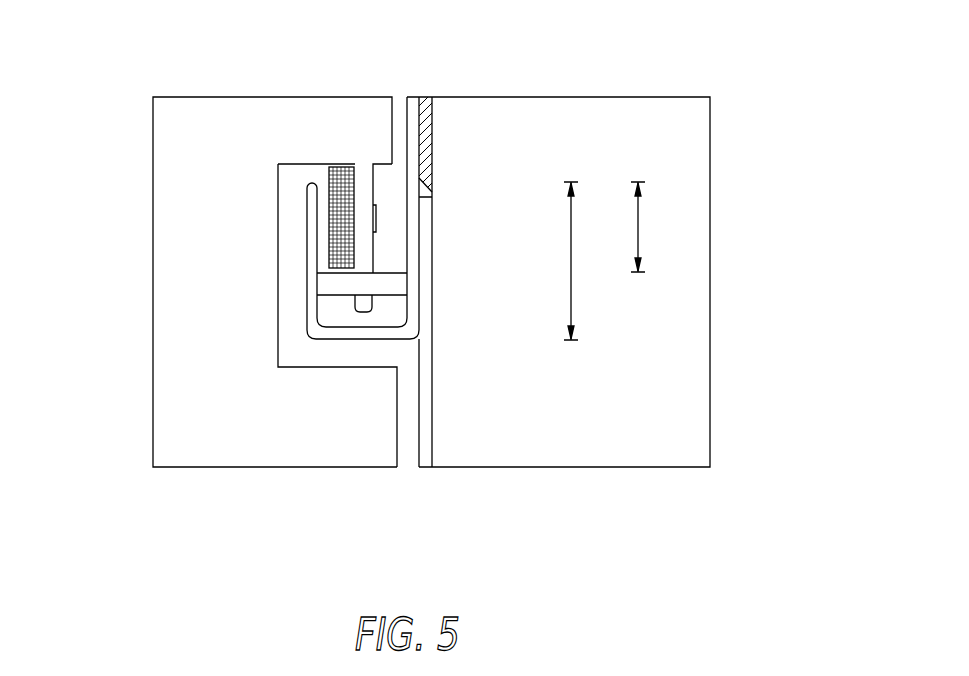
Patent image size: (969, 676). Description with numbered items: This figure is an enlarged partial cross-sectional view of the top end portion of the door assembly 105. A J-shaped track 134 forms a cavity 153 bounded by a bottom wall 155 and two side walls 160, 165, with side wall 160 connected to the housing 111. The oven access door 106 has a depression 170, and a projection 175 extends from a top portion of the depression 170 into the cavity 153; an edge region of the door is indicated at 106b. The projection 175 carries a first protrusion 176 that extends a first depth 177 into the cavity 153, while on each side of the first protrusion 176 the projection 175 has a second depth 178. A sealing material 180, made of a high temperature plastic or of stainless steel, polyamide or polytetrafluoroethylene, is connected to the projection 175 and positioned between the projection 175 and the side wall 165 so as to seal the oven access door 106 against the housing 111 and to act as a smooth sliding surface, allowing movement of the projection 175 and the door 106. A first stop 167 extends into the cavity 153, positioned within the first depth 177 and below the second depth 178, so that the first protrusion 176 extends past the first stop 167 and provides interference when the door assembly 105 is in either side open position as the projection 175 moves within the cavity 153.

The door assembly 105 is at (352, 112).
The oven access door 106 is at (187, 292).
The edge of first panel 106b is at (397, 428).
The housing 111 is at (668, 416).
The track 134 is at (372, 332).
The cavity 153 is at (398, 305).
The bottom wall 155 is at (389, 343).
The side wall 160 is at (415, 248).
The side wall 165 is at (313, 226).
The first stop 167 is at (391, 284).
The depression 170 is at (313, 368).
The projection 175 is at (362, 217).
The first protrusion 176 is at (364, 307).
The first depth 177 is at (571, 256).
The second depth 178 is at (638, 222).
The sealing material 180 is at (329, 167).